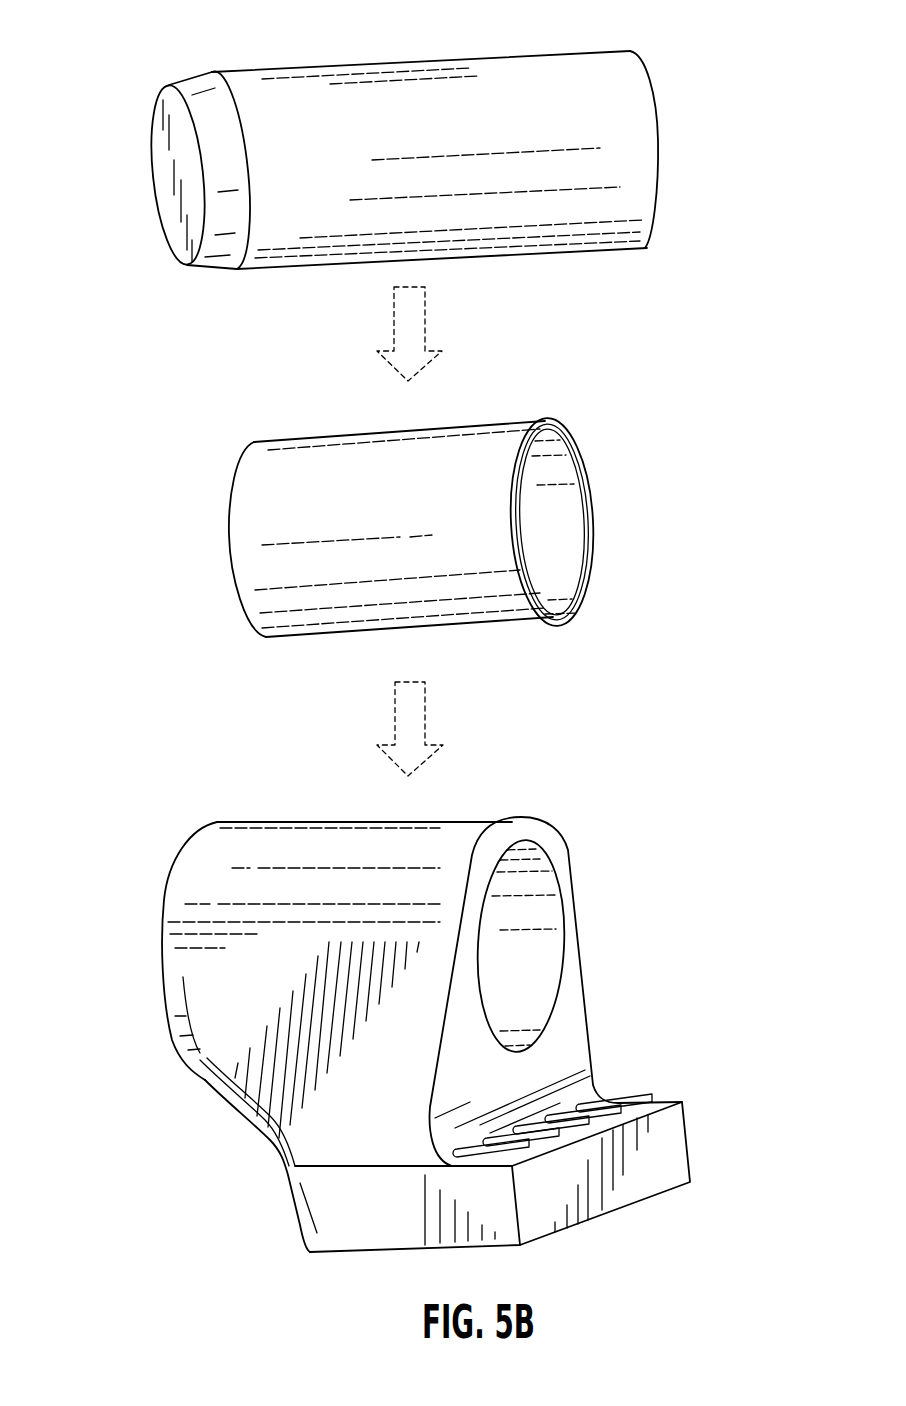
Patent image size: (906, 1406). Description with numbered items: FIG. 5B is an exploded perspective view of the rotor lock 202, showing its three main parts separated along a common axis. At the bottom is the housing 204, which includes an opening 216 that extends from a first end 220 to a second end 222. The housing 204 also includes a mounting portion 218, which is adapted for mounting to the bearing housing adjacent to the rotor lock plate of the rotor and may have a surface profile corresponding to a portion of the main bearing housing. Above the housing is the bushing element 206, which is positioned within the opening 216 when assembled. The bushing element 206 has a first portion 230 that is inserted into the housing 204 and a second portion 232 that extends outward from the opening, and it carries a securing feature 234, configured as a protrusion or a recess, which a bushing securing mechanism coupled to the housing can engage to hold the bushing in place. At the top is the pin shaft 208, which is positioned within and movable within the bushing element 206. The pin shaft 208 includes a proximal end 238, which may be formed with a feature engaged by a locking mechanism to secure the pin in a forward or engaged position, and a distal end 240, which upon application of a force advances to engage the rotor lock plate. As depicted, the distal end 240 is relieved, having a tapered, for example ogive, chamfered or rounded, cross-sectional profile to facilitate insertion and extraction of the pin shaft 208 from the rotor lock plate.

The rotor lock 202 is at (411, 1004).
The housing 204 is at (450, 857).
The bushing element 206 is at (483, 473).
The pin shaft 208 is at (377, 103).
The opening 216 is at (537, 956).
The mounting portion 218 is at (630, 1168).
The first end 220 is at (537, 1004).
The second end 222 is at (157, 895).
The first portion 230 is at (285, 435).
The second portion 232 is at (560, 418).
The securing feature 234 is at (552, 622).
The proximal end 238 is at (616, 92).
The distal end 240 is at (278, 102).